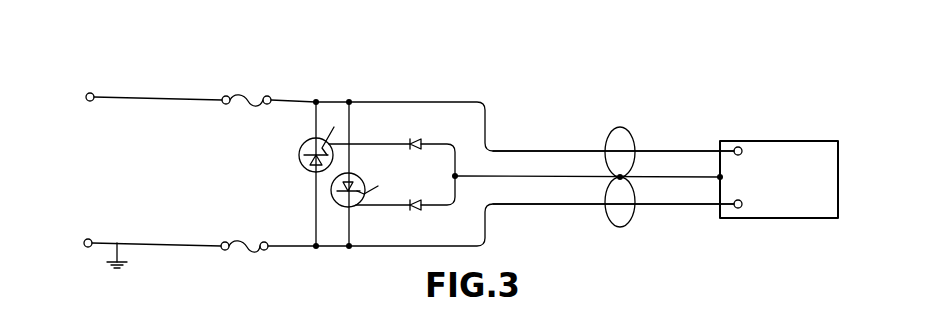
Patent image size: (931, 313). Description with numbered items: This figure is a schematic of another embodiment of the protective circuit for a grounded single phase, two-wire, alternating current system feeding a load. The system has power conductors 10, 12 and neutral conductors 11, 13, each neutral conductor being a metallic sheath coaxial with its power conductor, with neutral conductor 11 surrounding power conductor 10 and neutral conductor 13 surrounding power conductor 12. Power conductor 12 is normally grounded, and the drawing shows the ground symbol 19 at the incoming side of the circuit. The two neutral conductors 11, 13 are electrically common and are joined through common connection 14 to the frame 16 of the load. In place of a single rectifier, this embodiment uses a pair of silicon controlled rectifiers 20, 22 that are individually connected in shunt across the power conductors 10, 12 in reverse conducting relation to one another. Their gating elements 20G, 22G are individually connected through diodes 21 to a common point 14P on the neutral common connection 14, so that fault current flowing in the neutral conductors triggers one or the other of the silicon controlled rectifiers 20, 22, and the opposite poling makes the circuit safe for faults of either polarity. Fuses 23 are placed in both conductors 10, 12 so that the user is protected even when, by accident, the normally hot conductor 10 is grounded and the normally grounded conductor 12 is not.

The power conductor 10 is at (546, 149).
The neutral conductor 11 is at (633, 133).
The power conductor 12 is at (546, 206).
The neutral conductor 13 is at (633, 222).
The common connection 14 is at (588, 178).
The common point 14P is at (458, 178).
The frame of the load 16 is at (786, 141).
The ground 19 is at (110, 269).
The silicon controlled rectifier 20 is at (356, 174).
The gating element 20G is at (378, 186).
The diode 21 is at (425, 137).
The silicon controlled rectifier 22 is at (299, 168).
The gating element 22G is at (334, 133).
The fuse 23 is at (249, 101).